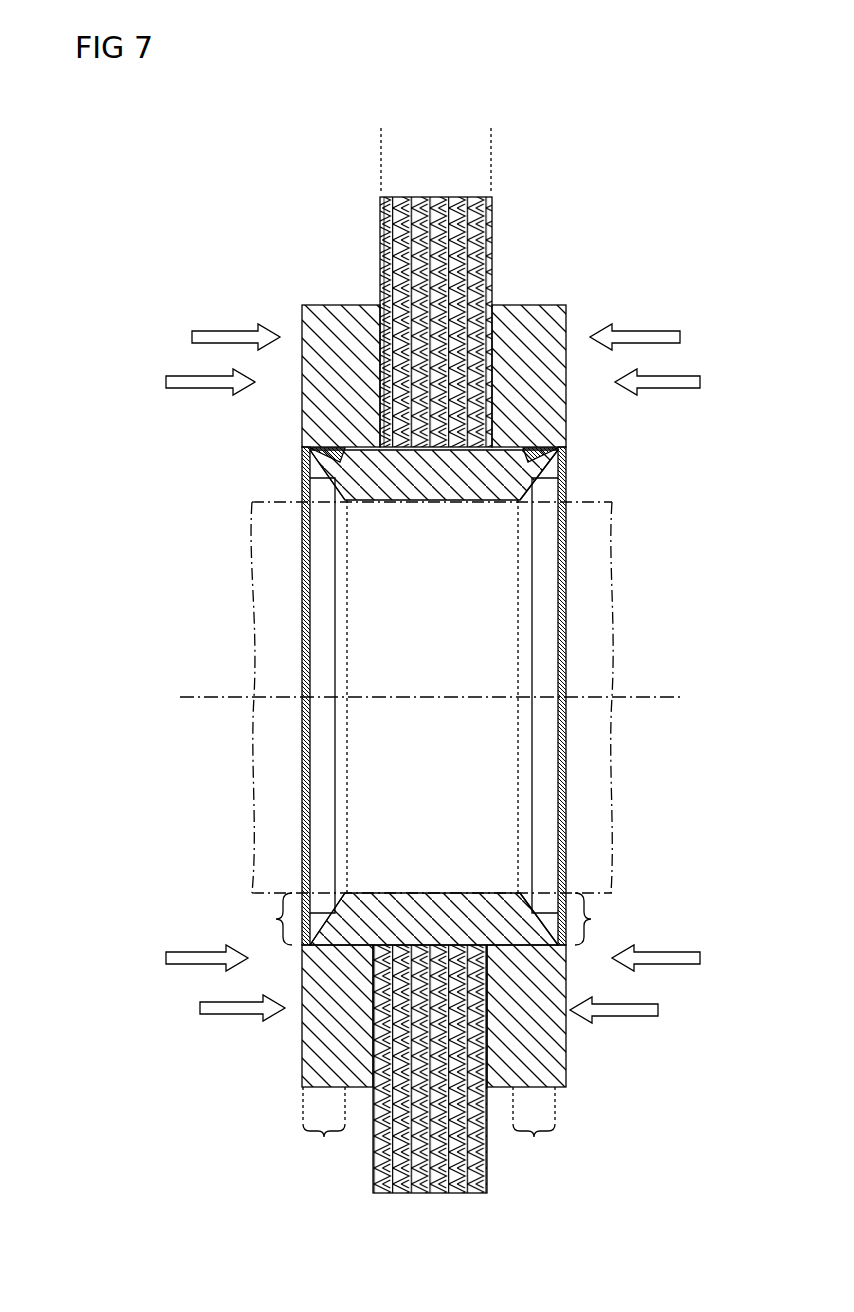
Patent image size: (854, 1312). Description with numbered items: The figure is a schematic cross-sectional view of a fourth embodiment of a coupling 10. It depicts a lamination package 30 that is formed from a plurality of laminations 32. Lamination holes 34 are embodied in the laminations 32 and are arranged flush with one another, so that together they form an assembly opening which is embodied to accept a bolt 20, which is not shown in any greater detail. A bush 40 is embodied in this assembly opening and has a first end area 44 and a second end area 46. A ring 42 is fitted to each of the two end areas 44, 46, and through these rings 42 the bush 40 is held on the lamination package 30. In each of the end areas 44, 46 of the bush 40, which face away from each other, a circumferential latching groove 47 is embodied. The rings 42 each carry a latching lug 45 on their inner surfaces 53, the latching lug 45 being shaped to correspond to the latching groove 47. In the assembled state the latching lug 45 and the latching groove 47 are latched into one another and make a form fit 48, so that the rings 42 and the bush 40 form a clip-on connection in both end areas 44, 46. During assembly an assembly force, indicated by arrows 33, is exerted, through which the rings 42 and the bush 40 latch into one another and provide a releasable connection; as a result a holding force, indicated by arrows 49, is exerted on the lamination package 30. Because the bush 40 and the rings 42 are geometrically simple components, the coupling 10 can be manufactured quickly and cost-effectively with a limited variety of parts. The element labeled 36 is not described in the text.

The coupling 10 is at (150, 564).
The bolt 20 is at (258, 800).
The lamination package 30 is at (492, 122).
The laminations 32 is at (416, 197).
The assembly force 33 is at (190, 396).
The lamination holes 34 is at (434, 895).
The sealing element 36 is at (395, 900).
The bush 40 is at (428, 504).
The ring 42 is at (340, 305).
The first end area 44 is at (534, 1128).
The latching lug 45 is at (318, 444).
The second end area 46 is at (324, 1128).
The latching groove 47 is at (355, 504).
The form fit 48 is at (578, 852).
The holding force 49 is at (228, 330).
The inner surfaces 53 is at (440, 902).